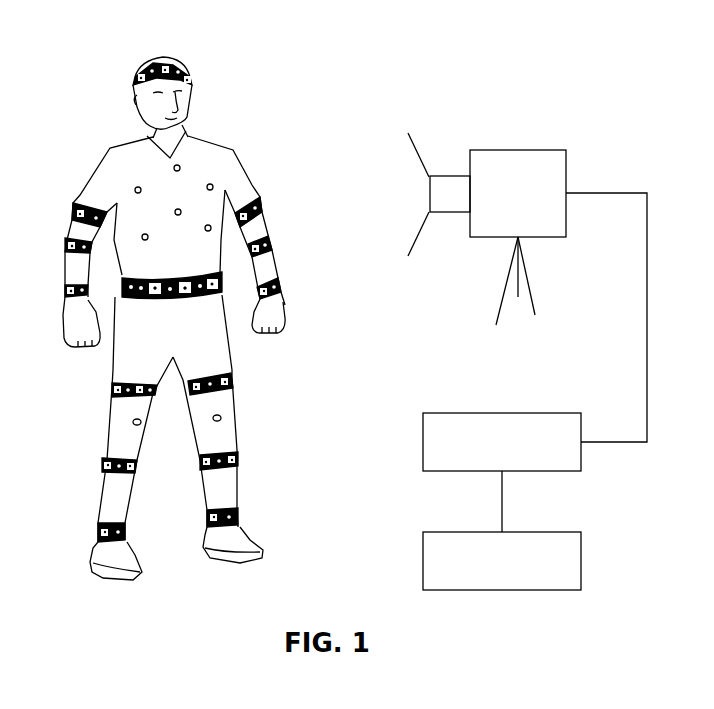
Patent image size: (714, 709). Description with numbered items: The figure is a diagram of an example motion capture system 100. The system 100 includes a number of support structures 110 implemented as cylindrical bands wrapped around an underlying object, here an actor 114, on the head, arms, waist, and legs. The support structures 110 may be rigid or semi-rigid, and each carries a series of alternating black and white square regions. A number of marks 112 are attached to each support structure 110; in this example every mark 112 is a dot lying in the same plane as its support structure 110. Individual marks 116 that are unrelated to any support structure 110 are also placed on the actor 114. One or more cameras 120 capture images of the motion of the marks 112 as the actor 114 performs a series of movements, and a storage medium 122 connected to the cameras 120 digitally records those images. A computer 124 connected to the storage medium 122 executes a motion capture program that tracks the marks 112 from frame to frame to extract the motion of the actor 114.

The motion capture system 100 is at (392, 42).
The support structure 110 is at (72, 203).
The mark 112 is at (65, 247).
The actor 114 is at (252, 146).
The individual mark 116 is at (172, 168).
The camera 120 is at (521, 141).
The storage medium 122 is at (544, 413).
The computer 124 is at (548, 532).